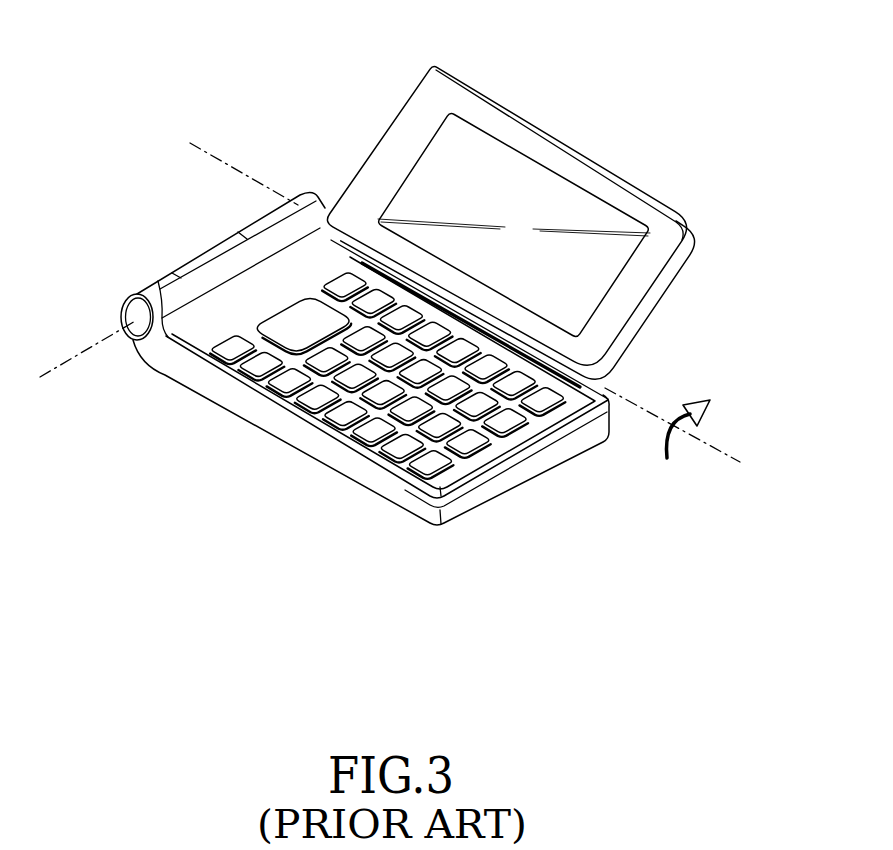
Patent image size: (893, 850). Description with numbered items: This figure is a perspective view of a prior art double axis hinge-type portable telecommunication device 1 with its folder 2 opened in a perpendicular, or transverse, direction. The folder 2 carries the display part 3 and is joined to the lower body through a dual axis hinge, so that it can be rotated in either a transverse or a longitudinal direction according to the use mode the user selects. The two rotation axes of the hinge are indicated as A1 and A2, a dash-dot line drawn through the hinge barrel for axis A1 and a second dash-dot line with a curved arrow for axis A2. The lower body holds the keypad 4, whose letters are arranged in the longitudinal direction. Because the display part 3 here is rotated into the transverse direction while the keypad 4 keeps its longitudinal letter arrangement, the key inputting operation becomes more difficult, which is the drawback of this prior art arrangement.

The double axis hinge-type portable telecommunication device 1 is at (415, 270).
The folder 2 is at (510, 206).
The display part 3 is at (532, 170).
The keypad 4 is at (373, 430).
The first hinge axis A1 is at (90, 347).
The second hinge axis A2 is at (717, 442).